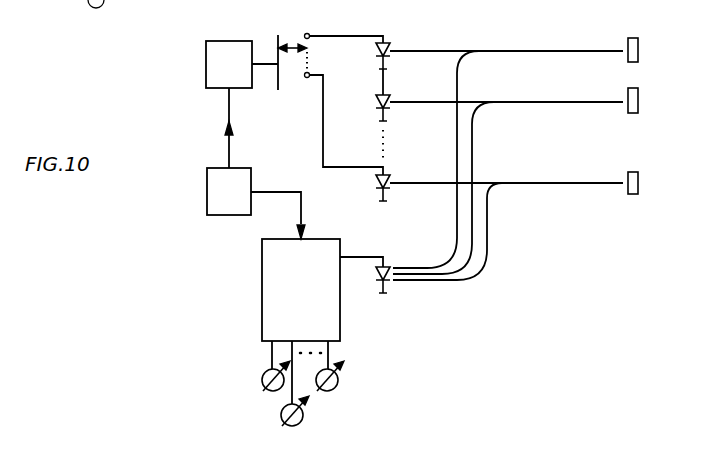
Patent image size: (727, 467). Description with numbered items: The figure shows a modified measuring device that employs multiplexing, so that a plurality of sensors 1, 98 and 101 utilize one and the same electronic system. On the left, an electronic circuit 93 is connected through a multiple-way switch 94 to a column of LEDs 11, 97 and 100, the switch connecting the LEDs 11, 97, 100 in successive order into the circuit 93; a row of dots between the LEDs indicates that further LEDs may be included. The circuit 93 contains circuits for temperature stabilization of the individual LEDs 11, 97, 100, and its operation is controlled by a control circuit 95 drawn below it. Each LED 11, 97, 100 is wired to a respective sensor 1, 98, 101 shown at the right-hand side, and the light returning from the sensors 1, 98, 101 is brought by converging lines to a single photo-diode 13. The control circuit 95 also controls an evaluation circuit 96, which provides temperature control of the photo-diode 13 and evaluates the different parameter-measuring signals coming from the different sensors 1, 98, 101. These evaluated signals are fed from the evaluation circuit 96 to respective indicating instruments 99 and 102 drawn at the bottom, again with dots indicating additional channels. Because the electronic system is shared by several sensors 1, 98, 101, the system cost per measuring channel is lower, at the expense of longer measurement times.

The sensor 1 is at (633, 37).
The LED 11 is at (391, 46).
The photo-diode 13 is at (389, 267).
The electronic circuit 93 is at (222, 41).
The multiple-way switch 94 is at (278, 38).
The control circuit 95 is at (237, 167).
The evaluation circuit 96 is at (316, 239).
The LED 97 is at (391, 98).
The sensor 98 is at (628, 93).
The instrument 99 is at (262, 376).
The LED 100 is at (391, 177).
The sensor 101 is at (628, 177).
The instrument 102 is at (342, 381).